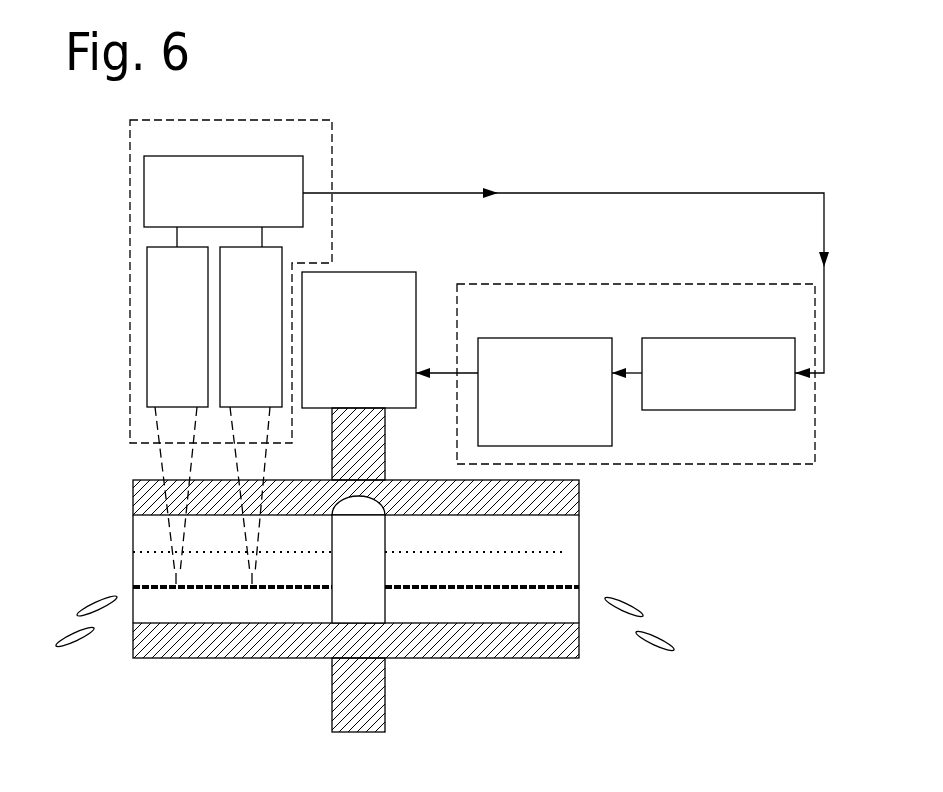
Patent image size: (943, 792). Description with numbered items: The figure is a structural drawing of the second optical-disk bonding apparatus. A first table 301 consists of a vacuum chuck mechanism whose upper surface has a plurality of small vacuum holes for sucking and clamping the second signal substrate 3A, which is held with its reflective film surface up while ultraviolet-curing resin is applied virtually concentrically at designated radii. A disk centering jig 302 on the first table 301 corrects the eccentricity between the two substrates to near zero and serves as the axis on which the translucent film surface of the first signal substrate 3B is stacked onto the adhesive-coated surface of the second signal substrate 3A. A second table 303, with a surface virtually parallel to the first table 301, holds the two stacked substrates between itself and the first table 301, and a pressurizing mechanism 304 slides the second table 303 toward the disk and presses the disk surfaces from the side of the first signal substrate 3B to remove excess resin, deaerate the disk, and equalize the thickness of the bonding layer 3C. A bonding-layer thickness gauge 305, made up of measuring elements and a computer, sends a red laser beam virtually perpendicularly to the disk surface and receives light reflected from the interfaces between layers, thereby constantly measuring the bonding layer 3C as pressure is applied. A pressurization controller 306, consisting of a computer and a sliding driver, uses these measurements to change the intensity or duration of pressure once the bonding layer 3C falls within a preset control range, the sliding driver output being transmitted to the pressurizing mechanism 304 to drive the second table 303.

The first table 301 is at (222, 658).
The disk centering jig 302 is at (372, 587).
The second table 303 is at (580, 487).
The pressurizing mechanism 304 is at (386, 272).
The bonding-layer thickness gauge 305 is at (311, 157).
The pressurization controller 306 is at (673, 443).
The second signal substrate 3A is at (503, 610).
The first signal substrate 3B is at (557, 540).
The bonding layer 3C is at (522, 577).